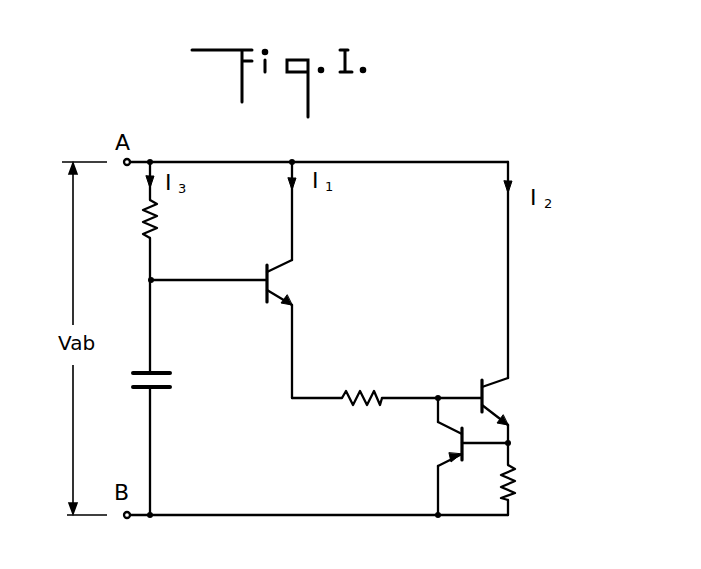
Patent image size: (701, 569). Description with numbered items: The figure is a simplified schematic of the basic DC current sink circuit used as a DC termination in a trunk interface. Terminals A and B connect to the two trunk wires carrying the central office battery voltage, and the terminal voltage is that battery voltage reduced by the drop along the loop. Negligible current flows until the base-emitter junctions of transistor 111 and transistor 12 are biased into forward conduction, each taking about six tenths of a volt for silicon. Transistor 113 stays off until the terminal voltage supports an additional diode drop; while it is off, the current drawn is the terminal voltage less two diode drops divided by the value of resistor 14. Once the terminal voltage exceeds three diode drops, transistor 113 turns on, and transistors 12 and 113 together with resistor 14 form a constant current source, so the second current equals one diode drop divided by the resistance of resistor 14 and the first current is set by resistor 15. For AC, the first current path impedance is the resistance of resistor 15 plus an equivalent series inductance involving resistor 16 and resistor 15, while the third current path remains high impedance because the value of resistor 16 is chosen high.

The resistor 16 is at (155, 227).
The transistor 111 is at (267, 270).
The resistor 15 is at (366, 392).
The transistor 12 is at (482, 386).
The transistor 113 is at (462, 443).
The resistor 14 is at (520, 478).